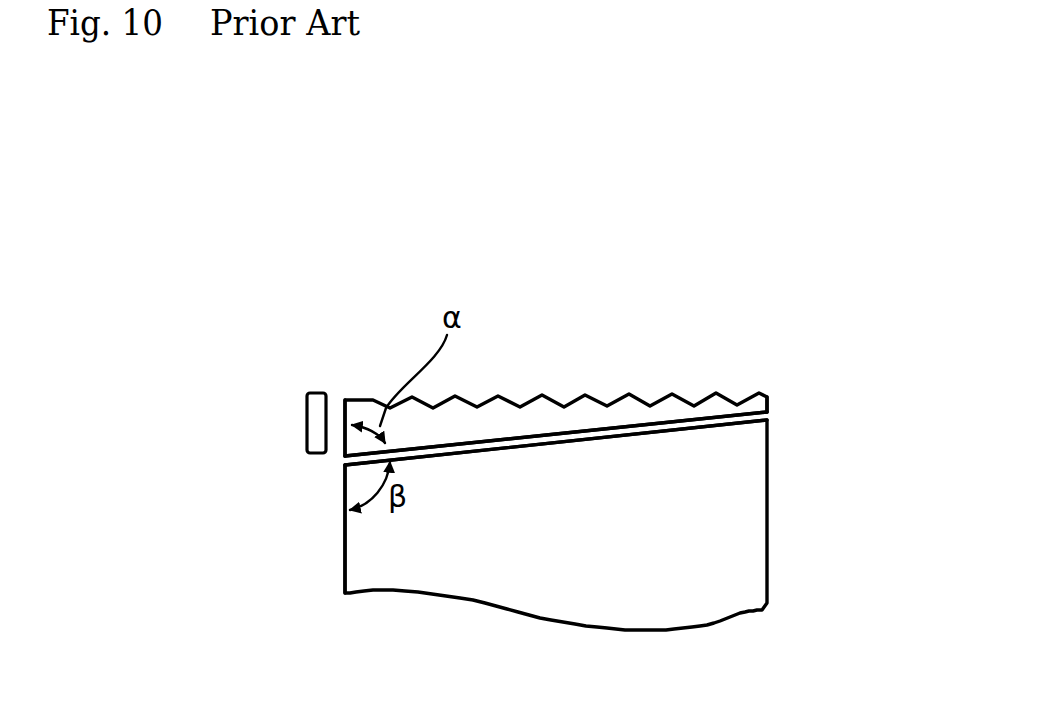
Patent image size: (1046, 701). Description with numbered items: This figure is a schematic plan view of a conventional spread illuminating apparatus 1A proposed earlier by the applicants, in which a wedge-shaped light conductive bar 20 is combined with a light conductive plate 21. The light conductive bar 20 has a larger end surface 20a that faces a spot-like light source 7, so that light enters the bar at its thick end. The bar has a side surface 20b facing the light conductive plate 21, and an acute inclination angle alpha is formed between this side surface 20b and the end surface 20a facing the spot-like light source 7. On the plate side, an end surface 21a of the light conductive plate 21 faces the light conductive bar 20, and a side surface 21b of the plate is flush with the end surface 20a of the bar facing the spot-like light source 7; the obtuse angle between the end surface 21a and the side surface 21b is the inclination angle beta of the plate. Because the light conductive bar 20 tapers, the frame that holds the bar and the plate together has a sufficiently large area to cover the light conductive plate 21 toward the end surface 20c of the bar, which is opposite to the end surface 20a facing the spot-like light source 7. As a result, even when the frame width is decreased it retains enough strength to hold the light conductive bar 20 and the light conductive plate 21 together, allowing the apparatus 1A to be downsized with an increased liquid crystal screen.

The spread illuminating apparatus 1A is at (557, 411).
The spot-like light source 7 is at (317, 422).
The light conductive bar 20 is at (630, 414).
The end surface 20a is at (336, 404).
The side surface 20b is at (526, 434).
The end surface 20c is at (768, 403).
The light conductive plate 21 is at (733, 535).
The end surface 21a is at (590, 437).
The side surface 21b is at (343, 556).